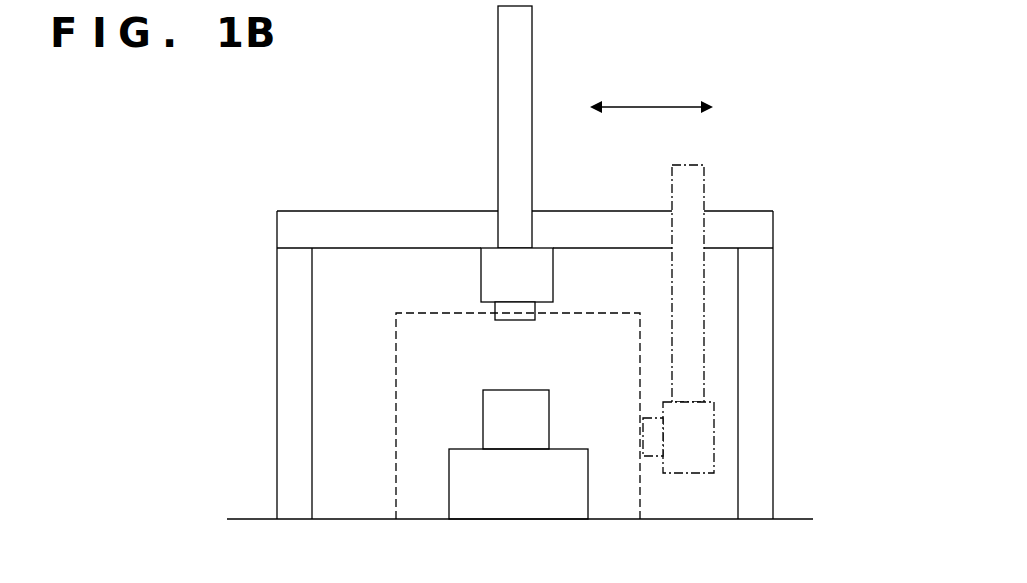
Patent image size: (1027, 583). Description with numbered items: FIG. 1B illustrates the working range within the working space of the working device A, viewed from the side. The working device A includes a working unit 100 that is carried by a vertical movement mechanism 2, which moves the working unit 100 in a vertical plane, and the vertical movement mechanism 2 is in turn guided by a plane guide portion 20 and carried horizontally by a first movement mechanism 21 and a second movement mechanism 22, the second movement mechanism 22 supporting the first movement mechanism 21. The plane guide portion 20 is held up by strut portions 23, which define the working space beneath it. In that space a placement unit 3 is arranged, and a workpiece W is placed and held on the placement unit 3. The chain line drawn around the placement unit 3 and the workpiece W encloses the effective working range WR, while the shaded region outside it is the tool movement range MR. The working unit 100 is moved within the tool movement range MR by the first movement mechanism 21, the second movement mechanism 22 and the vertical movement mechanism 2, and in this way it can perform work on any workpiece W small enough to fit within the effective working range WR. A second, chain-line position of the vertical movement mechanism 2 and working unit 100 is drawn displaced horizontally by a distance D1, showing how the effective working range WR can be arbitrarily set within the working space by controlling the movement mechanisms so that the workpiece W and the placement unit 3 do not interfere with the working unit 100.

The working device A is at (400, 101).
The vertical movement mechanism 2 is at (520, 115).
The placement unit 3 is at (485, 505).
The plane guide portion 20 is at (531, 312).
The first movement mechanism 21 is at (407, 218).
The second movement mechanism 22 is at (293, 218).
The strut portion 23 is at (292, 452).
The working unit 100 is at (530, 280).
The workpiece W is at (533, 408).
The effective working range WR is at (613, 507).
The tool movement range MR is at (693, 503).
The horizontal direction D1 is at (651, 87).